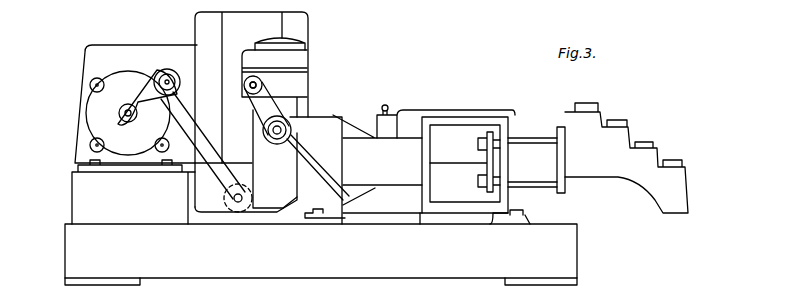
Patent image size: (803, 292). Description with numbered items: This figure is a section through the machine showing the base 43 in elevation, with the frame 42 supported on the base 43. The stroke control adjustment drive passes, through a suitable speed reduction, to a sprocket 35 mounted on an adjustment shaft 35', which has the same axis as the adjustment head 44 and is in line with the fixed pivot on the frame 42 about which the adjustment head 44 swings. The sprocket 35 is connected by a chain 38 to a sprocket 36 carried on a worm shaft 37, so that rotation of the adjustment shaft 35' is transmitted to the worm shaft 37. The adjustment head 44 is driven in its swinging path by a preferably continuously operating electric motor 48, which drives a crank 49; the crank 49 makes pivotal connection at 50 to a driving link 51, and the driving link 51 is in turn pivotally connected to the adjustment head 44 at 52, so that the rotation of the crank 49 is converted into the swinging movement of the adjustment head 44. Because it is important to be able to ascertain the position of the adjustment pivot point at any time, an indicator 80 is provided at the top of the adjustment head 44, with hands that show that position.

The electric motor 48 is at (84, 60).
The crank 49 is at (134, 95).
The pivotal connection 50 is at (173, 68).
The driving link 51 is at (194, 133).
The pivotal connection to adjustment head 52 is at (240, 212).
The worm shaft 37 is at (244, 83).
The sprocket 36 is at (262, 85).
The adjustment head 44 is at (262, 128).
The indicator 80 is at (282, 40).
The chain 38 is at (282, 112).
The frame 42 is at (323, 117).
The sprocket 35 is at (303, 176).
The adjustment shaft 35' is at (297, 167).
The base 43 is at (321, 254).